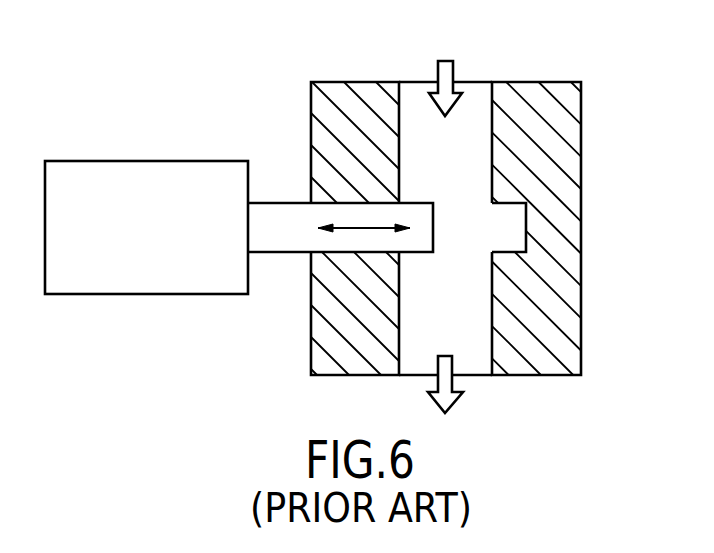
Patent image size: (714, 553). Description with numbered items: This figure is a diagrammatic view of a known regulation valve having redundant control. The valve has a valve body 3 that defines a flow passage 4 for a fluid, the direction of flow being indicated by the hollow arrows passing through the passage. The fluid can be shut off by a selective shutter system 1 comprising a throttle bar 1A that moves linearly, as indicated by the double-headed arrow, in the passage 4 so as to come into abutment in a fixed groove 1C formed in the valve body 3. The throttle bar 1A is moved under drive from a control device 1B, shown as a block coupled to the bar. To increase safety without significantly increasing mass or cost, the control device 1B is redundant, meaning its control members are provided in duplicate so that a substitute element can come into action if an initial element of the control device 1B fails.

The selective shutter system 1 is at (239, 253).
The throttle bar 1A is at (285, 217).
The control device 1B is at (117, 172).
The fixed groove 1C is at (512, 252).
The valve body 3 is at (535, 92).
The flow passage 4 is at (400, 110).